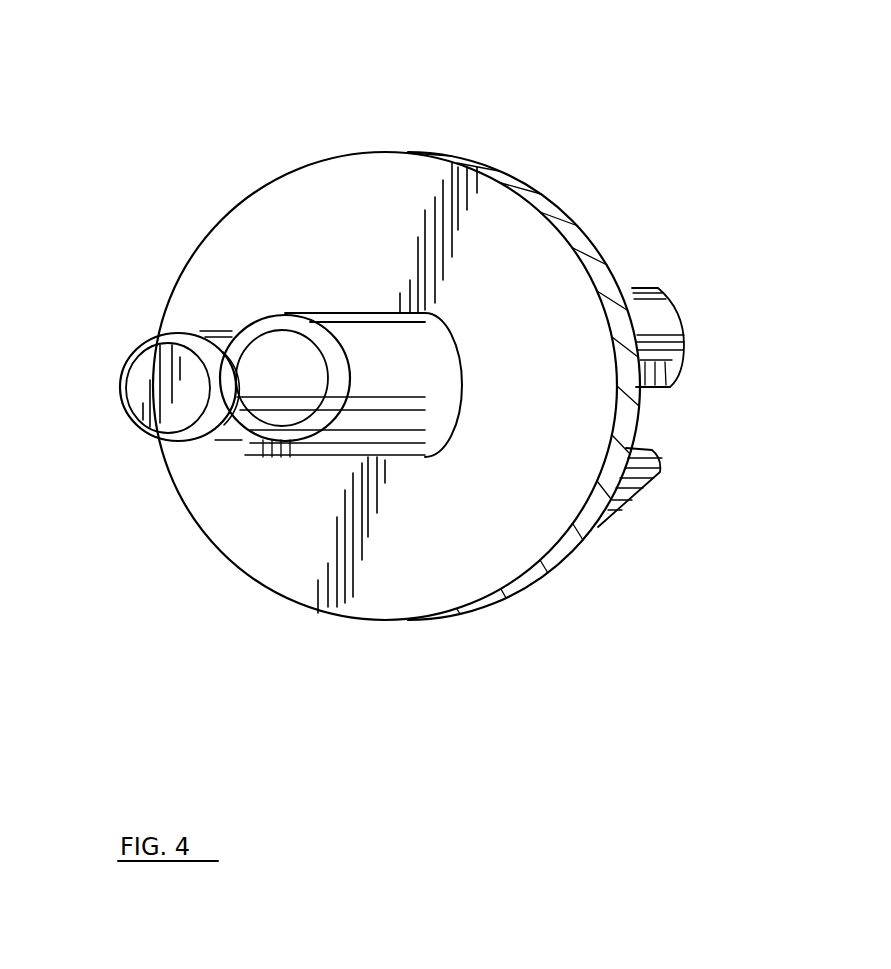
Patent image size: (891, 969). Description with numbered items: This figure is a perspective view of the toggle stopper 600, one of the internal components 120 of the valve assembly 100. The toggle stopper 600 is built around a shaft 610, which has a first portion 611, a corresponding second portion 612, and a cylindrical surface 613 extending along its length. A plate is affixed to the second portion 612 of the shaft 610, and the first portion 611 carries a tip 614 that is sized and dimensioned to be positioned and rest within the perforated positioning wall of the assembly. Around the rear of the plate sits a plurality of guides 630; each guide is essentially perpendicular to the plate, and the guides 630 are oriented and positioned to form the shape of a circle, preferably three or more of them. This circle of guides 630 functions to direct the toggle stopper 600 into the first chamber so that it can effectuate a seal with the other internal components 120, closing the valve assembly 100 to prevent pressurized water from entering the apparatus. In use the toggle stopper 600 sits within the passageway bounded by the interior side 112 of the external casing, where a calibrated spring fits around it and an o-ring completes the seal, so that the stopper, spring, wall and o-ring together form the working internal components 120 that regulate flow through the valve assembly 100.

The valve assembly 100 is at (541, 120).
The interior side 112 is at (625, 427).
The internal components 120 is at (712, 348).
The toggle stopper 600 is at (360, 128).
The shaft 610 is at (327, 311).
The first portion 611 is at (562, 262).
The second portion 612 is at (405, 427).
The cylindrical surface 613 is at (372, 337).
The tip 614 is at (140, 342).
The guides 630 is at (655, 315).